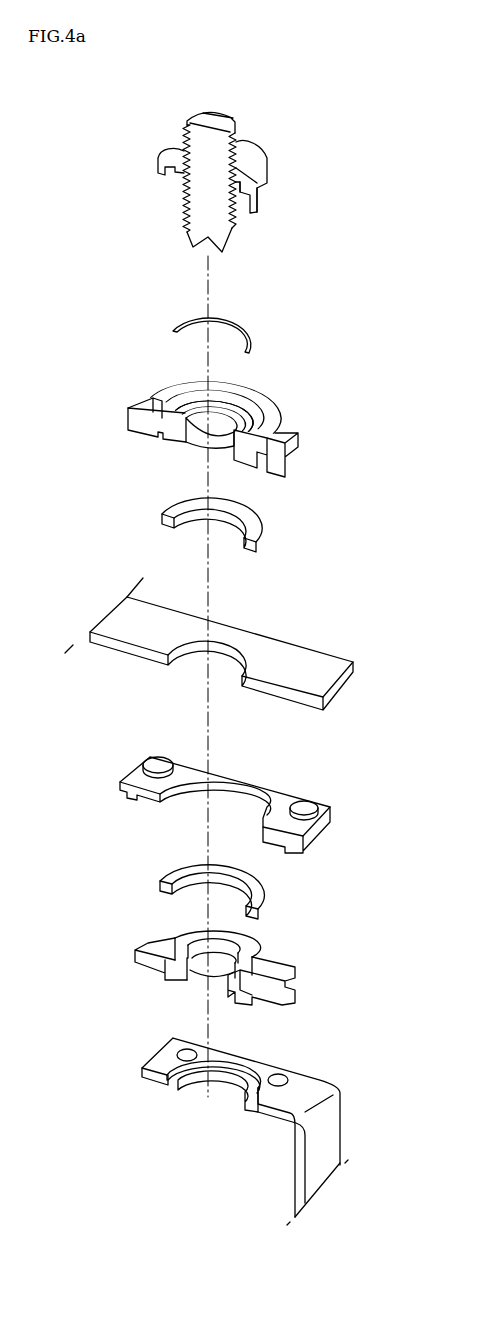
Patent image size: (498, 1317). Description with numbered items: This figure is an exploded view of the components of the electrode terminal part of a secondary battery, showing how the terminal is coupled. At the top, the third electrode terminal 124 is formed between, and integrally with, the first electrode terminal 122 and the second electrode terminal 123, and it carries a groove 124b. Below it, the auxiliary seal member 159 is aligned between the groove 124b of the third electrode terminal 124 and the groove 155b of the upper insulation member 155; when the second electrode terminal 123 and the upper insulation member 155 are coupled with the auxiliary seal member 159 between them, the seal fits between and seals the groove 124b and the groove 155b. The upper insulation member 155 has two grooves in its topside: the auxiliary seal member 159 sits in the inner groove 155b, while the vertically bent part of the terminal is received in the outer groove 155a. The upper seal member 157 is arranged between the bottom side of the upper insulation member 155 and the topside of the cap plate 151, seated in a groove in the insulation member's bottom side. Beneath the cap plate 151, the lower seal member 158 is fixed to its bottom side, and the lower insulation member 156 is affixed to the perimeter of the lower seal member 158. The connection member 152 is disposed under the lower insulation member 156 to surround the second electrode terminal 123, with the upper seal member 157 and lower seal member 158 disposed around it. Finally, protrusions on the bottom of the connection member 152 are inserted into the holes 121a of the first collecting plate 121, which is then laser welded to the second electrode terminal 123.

The first collecting plate 121 is at (266, 1123).
The holes 121a is at (281, 1076).
The first electrode terminal 122 is at (213, 180).
The second electrode terminal 123 is at (205, 196).
The third electrode terminal 124 is at (237, 187).
The groove 124b is at (244, 205).
The cap plate 151 is at (295, 648).
The connection member 152 is at (280, 966).
The upper insulation member 155 is at (222, 409).
The groove 155a is at (142, 401).
The groove 155b is at (182, 398).
The lower insulation member 156 is at (300, 793).
The upper seal member 157 is at (256, 524).
The lower seal member 158 is at (260, 893).
The auxiliary seal member 159 is at (245, 322).